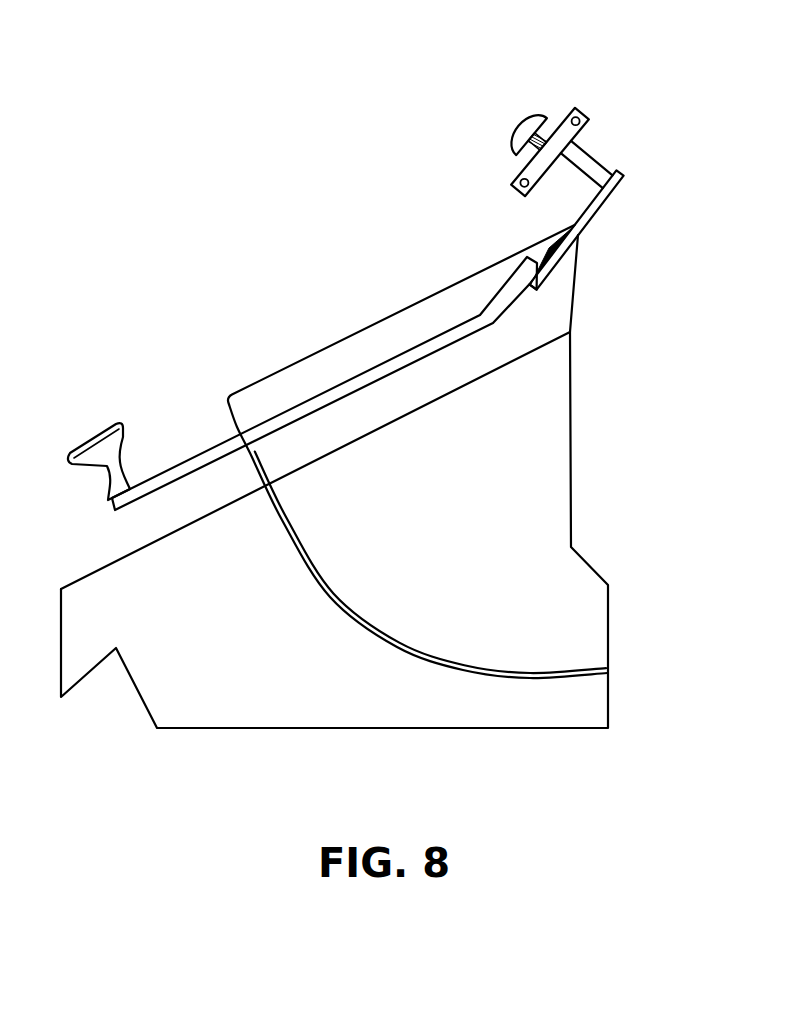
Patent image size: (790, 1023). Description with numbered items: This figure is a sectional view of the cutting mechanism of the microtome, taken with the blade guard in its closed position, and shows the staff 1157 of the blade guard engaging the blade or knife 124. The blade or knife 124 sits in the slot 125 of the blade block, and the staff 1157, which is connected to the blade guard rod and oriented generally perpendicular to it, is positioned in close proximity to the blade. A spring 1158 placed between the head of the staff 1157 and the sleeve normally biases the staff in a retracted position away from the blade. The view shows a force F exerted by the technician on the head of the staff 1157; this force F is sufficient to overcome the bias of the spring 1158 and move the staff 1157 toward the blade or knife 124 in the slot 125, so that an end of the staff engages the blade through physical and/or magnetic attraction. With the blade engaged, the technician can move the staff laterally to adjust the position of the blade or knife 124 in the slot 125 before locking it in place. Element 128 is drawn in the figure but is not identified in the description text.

The blade or knife 124 is at (624, 185).
The slot 125 is at (603, 232).
The cover plate 128 is at (388, 307).
The staff 1157 is at (535, 117).
The spring 1158 is at (549, 128).
The force F is at (500, 112).